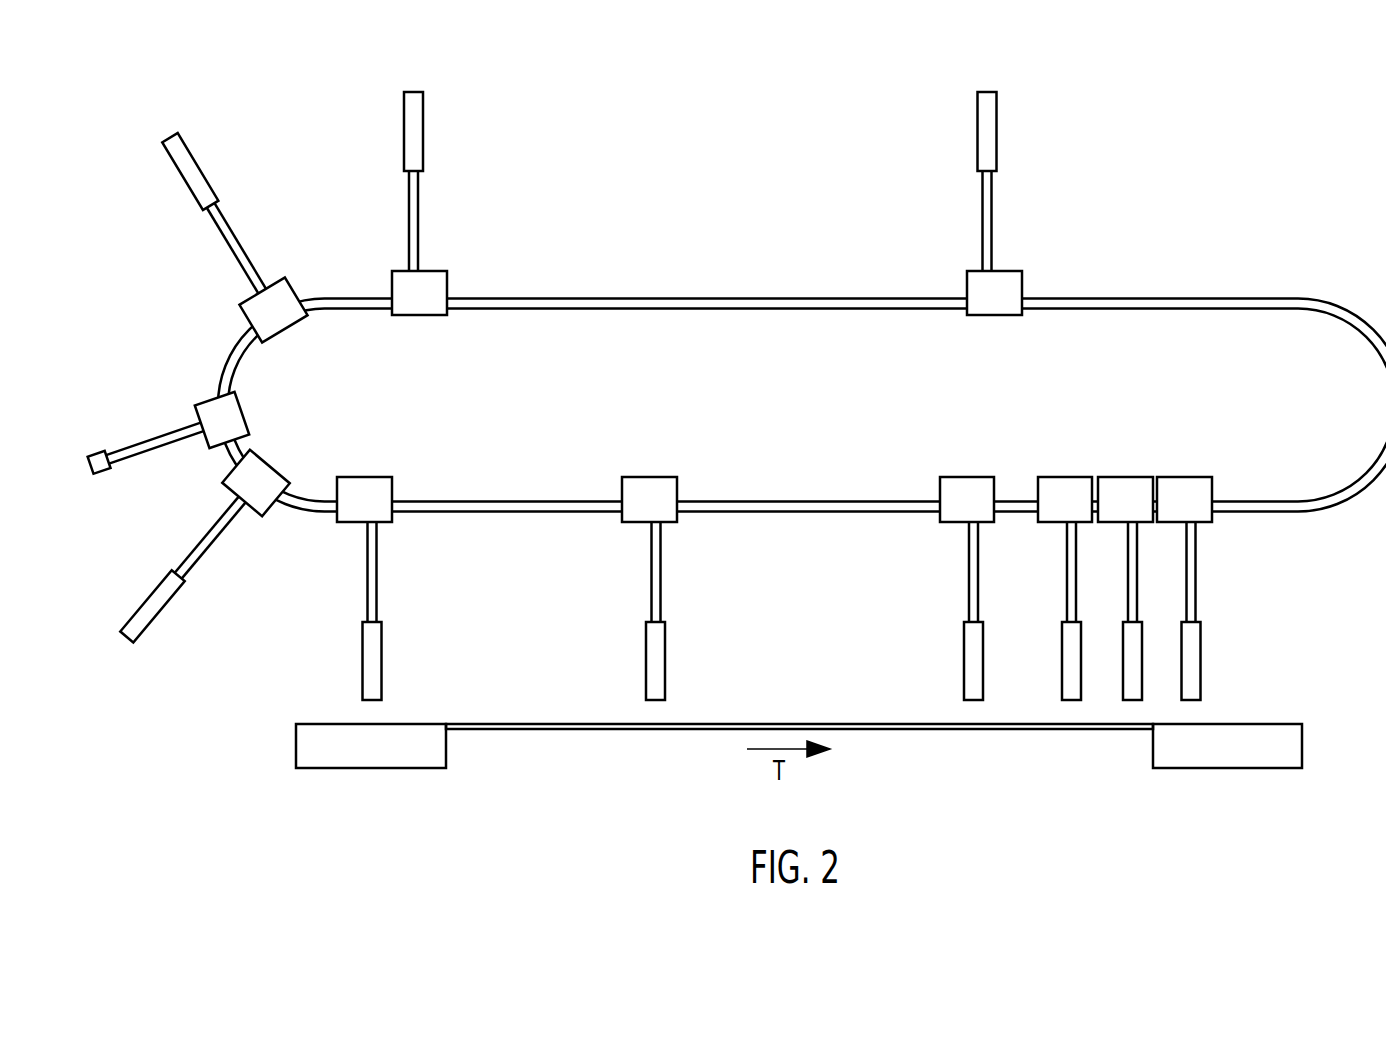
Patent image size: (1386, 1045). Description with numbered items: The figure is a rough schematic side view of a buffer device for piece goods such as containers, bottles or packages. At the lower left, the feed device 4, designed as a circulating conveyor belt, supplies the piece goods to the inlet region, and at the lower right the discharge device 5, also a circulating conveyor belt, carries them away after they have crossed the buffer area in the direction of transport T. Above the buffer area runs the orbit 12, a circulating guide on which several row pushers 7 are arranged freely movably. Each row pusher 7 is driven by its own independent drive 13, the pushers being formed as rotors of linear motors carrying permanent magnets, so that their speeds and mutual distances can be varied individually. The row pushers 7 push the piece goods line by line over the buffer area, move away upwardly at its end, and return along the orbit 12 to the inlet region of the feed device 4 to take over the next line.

The orbit 12 is at (608, 298).
The independent drive 13 is at (657, 477).
The row pusher 7 is at (665, 552).
The feed device 4 is at (428, 758).
The discharge device 5 is at (1284, 758).